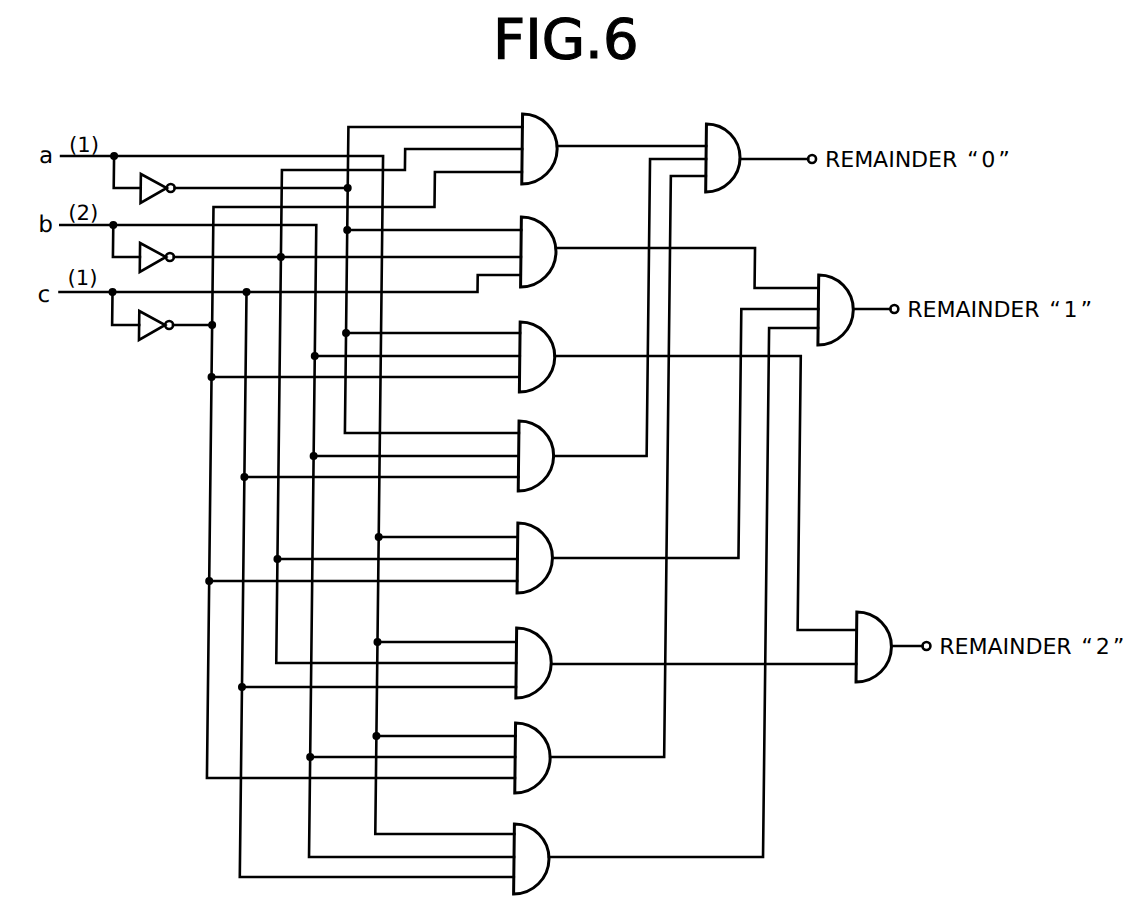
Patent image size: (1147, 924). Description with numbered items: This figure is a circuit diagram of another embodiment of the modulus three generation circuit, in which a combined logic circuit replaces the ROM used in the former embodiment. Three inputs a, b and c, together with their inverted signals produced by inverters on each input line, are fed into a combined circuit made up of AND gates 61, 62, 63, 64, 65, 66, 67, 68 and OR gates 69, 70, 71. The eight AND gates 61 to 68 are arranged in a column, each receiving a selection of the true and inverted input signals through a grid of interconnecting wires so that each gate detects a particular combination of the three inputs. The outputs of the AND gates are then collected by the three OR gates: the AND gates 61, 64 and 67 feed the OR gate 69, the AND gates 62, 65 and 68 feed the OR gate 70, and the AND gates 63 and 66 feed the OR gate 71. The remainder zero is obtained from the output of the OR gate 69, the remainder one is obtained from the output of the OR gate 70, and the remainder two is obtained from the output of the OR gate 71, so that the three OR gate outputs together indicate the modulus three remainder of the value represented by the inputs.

The AND gate 61 is at (547, 130).
The AND gate 62 is at (547, 233).
The AND gate 63 is at (547, 338).
The AND gate 64 is at (547, 437).
The AND gate 65 is at (547, 539).
The AND gate 66 is at (547, 644).
The AND gate 67 is at (547, 739).
The AND gate 68 is at (547, 840).
The OR gate 69 is at (727, 123).
The OR gate 70 is at (833, 275).
The OR gate 71 is at (867, 612).